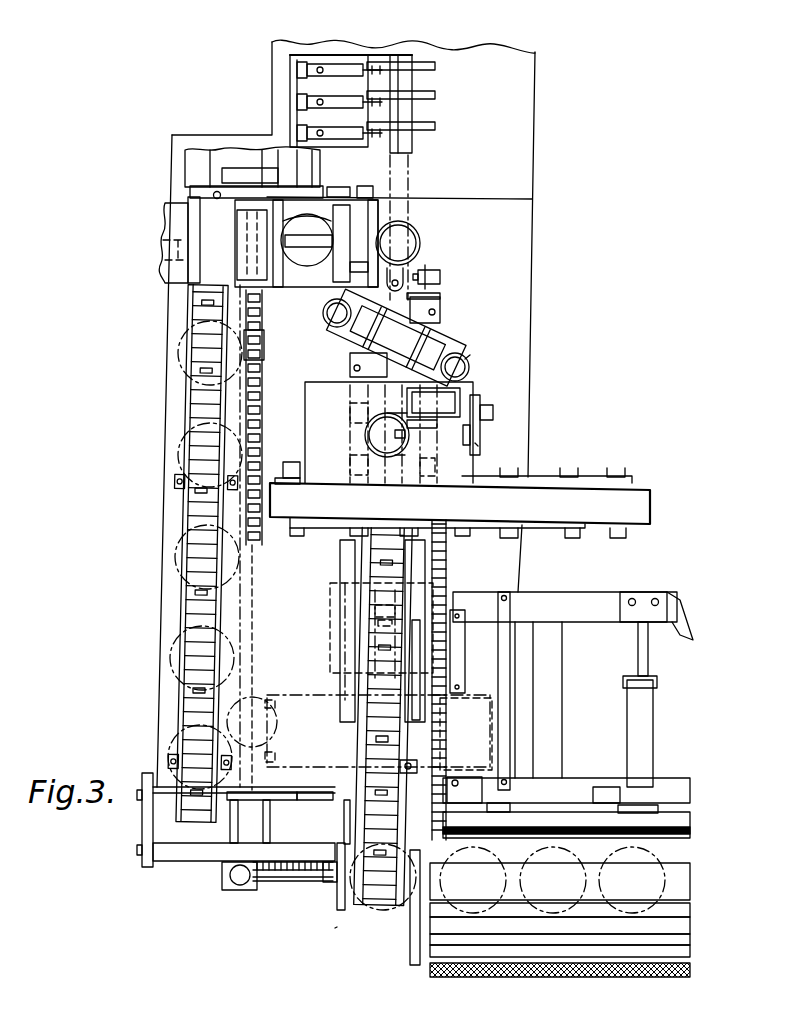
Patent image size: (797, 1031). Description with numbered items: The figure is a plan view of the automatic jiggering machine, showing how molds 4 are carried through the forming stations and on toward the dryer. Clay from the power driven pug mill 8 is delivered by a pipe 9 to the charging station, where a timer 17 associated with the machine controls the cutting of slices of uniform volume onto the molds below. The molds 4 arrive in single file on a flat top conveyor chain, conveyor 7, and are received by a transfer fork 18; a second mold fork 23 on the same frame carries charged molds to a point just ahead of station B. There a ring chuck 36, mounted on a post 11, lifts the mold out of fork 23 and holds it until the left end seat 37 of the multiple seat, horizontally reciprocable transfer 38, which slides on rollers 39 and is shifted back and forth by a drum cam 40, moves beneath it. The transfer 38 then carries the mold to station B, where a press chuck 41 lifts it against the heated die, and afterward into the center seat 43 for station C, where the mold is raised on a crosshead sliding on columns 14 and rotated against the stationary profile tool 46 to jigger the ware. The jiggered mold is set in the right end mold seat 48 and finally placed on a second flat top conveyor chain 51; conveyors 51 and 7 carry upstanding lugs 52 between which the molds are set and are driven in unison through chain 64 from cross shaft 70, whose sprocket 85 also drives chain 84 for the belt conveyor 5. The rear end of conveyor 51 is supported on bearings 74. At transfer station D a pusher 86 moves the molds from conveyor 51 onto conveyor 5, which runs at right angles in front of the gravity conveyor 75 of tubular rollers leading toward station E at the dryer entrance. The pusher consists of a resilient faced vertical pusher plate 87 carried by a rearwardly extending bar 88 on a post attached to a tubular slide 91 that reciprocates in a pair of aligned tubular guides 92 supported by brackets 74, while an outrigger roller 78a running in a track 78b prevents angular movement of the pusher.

The timer 17 is at (385, 54).
The transfer fork 18 is at (183, 205).
The pug mill 8 is at (160, 209).
The mold fork 23 is at (295, 253).
The pipe 9 is at (298, 287).
The ring chuck 36 is at (418, 226).
The post 11 is at (421, 240).
The rollers 39 is at (432, 268).
The transfer 38 is at (430, 294).
The left end seat 37 is at (442, 303).
The press chuck 41 is at (360, 363).
The station B is at (469, 346).
The center seat 43 is at (350, 446).
The profile tool 46 is at (410, 437).
The cross shaft 70 is at (273, 472).
The station C is at (483, 449).
The molds 4 is at (188, 440).
The conveyor 7 is at (190, 510).
The upstanding lugs 52 is at (195, 694).
The sprocket 85 is at (256, 540).
The chain 84 is at (262, 356).
The right end mold seat 48 is at (358, 546).
The flat top conveyor chain 51 is at (365, 740).
The drum cam 40 is at (330, 590).
The chain 64 is at (447, 558).
The columns 14 is at (268, 695).
The roller 78a is at (258, 796).
The track 78b is at (312, 797).
The bearings 74 is at (140, 791).
The tubular guides 92 is at (338, 856).
The pusher 86 is at (302, 890).
The pusher plate 87 is at (337, 905).
The tubular slide 91 is at (350, 840).
The bar 88 is at (302, 846).
The transfer station D is at (330, 933).
The conveyor 5 is at (430, 890).
The gravity conveyor 75 is at (430, 945).
The station E is at (595, 763).